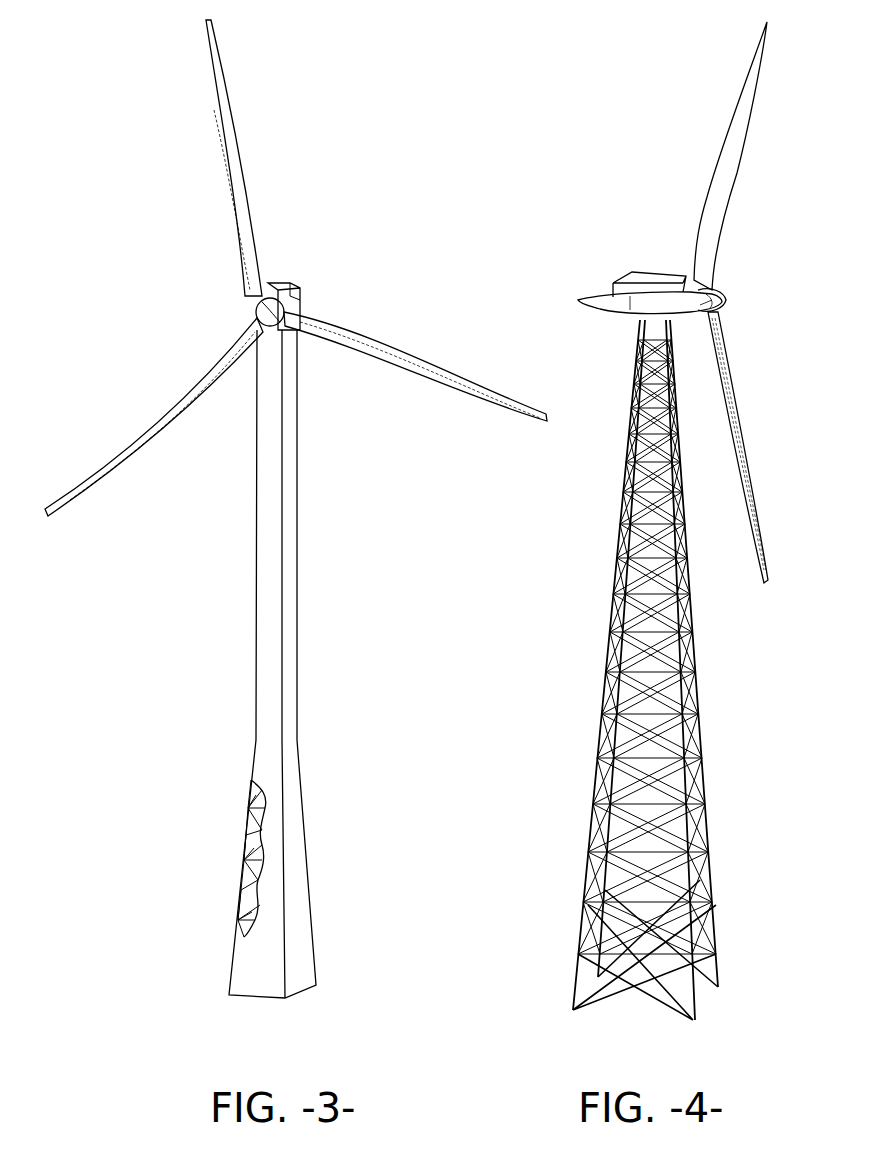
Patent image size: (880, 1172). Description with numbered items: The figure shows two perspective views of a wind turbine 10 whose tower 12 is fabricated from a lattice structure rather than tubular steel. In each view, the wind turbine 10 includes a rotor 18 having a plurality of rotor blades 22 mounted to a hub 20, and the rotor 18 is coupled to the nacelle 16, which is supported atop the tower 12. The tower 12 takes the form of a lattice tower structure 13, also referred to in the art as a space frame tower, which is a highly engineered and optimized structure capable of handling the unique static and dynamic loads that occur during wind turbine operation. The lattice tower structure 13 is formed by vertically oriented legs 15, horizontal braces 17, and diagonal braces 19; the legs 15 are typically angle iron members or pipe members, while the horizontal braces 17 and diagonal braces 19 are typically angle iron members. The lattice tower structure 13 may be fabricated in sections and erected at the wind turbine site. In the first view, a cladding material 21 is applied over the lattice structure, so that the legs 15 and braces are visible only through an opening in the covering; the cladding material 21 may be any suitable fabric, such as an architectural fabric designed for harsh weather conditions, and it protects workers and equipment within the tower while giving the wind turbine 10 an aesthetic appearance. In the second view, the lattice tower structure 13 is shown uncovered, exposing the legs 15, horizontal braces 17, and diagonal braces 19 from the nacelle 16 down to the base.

In FIG. 3, the wind turbine 10 is at (100, 142).
In FIG. 4, the wind turbine 10 is at (634, 186).
In FIG. 3, the tower 12 is at (298, 530).
In FIG. 4, the tower 12 is at (650, 670).
In FIG. 3, the lattice tower structure 13 is at (238, 622).
In FIG. 3, the legs 15 is at (236, 906).
In FIG. 4, the legs 15 is at (606, 782).
In FIG. 3, the nacelle 16 is at (298, 290).
In FIG. 4, the nacelle 16 is at (643, 276).
In FIG. 4, the horizontal braces 17 is at (690, 628).
In FIG. 3, the rotor 18 is at (236, 290).
In FIG. 4, the rotor 18 is at (732, 318).
In FIG. 4, the diagonal braces 19 is at (705, 782).
In FIG. 3, the hub 20 is at (266, 317).
In FIG. 4, the hub 20 is at (720, 298).
In FIG. 3, the cladding material 21 is at (263, 820).
In FIG. 3, the rotor blades 22 is at (233, 126).
In FIG. 4, the rotor blades 22 is at (738, 172).